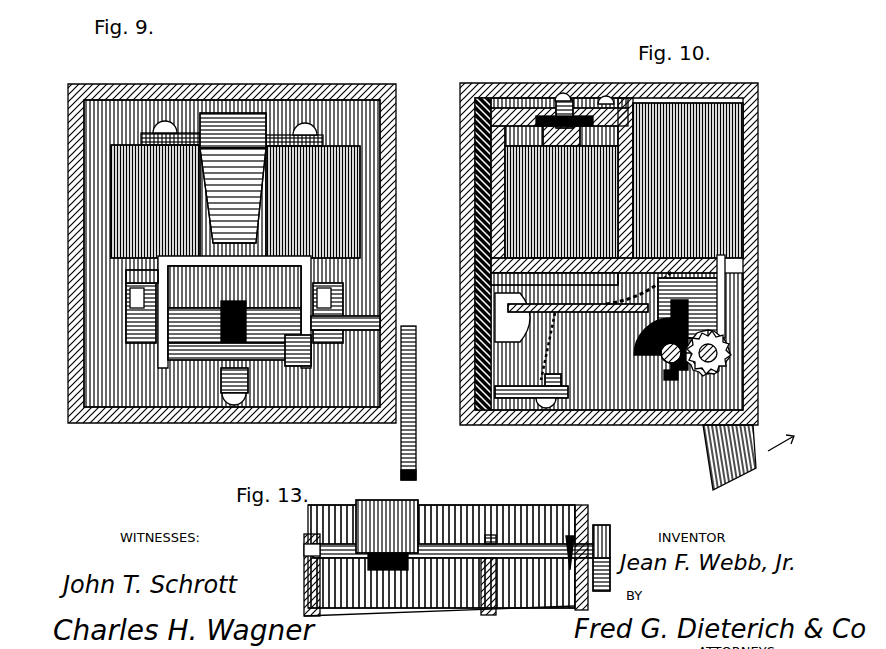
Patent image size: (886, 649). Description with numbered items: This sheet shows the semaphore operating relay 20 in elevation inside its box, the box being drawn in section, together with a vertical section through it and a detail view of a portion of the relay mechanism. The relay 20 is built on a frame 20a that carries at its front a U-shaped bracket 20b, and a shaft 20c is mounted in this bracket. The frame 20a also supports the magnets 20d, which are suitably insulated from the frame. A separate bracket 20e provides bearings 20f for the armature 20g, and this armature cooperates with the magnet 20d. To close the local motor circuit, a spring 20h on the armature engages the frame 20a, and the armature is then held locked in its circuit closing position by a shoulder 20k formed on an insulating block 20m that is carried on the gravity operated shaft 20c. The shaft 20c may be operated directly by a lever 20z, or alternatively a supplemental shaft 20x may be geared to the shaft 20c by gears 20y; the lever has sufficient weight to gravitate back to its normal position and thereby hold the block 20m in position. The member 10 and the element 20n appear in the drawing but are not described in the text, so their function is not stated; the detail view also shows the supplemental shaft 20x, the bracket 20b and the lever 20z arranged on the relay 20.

In FIG. 9, the plunger rod 10 is at (226, 445).
In FIG. 9, the relay 20 is at (176, 76).
In FIG. 13, the relay 20 is at (572, 497).
In FIG. 10, the frame 20a is at (503, 100).
In FIG. 10, the U-shaped bracket 20b is at (717, 280).
In FIG. 13, the U-shaped bracket 20b is at (296, 575).
In FIG. 10, the shaft 20c is at (653, 372).
In FIG. 9, the magnets 20d is at (235, 201).
In FIG. 10, the magnets 20d is at (561, 202).
In FIG. 9, the bracket 20e is at (388, 318).
In FIG. 10, the bracket 20e is at (470, 310).
In FIG. 9, the bearings 20f is at (120, 300).
In FIG. 9, the armature 20g is at (142, 290).
In FIG. 10, the armature 20g is at (470, 260).
In FIG. 13, the armature 20g is at (360, 492).
In FIG. 10, the spring 20h is at (688, 180).
In FIG. 10, the shoulder 20k is at (620, 305).
In FIG. 9, the insulating block 20m is at (234, 305).
In FIG. 13, the insulating block 20m is at (380, 562).
In FIG. 10, the pawl 20n is at (553, 372).
In FIG. 9, the supplemental shaft 20x is at (190, 340).
In FIG. 10, the supplemental shaft 20x is at (724, 348).
In FIG. 13, the supplemental shaft 20x is at (438, 540).
In FIG. 9, the gears 20y is at (283, 360).
In FIG. 10, the gears 20y is at (717, 330).
In FIG. 9, the lever 20z is at (408, 450).
In FIG. 10, the lever 20z is at (730, 468).
In FIG. 13, the lever 20z is at (596, 517).